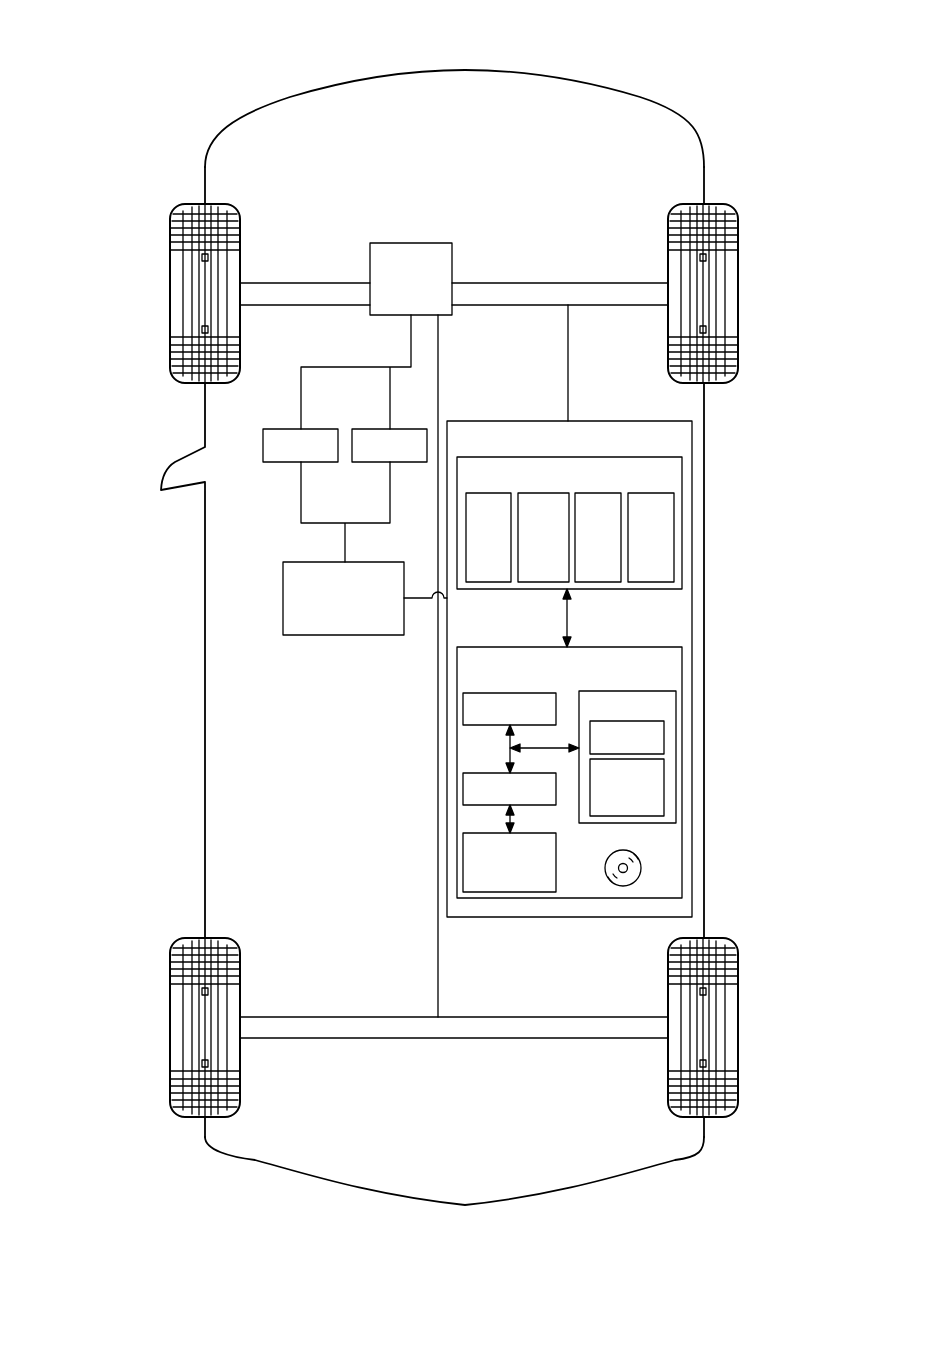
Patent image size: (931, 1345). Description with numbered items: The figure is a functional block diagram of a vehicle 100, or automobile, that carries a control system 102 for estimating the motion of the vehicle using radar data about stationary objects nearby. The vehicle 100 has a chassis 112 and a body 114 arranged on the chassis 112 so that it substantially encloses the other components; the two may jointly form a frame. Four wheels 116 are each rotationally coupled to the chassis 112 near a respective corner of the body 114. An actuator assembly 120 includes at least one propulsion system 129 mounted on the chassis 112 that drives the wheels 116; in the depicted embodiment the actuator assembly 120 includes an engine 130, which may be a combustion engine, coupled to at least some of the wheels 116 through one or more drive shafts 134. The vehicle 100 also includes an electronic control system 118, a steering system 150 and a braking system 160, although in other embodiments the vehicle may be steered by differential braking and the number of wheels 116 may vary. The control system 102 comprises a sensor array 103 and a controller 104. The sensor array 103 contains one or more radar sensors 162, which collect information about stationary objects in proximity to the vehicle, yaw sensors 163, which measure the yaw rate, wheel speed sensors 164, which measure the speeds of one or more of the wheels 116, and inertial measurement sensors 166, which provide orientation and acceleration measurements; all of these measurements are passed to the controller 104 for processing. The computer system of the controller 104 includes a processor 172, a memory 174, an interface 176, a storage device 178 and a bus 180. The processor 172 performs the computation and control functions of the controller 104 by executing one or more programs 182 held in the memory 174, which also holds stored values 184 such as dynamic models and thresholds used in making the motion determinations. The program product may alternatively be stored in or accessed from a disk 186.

The vehicle 100 is at (404, 603).
The control system 102 is at (586, 455).
The sensor array 103 is at (586, 489).
The controller 104 is at (586, 682).
The chassis 112 is at (438, 965).
The body 114 is at (205, 805).
The wheels 116 is at (170, 228).
The electronic control system 118 is at (363, 613).
The actuator assembly 120 is at (451, 326).
The propulsion system 129 is at (416, 243).
The engine 130 is at (430, 294).
The drive shafts 134 is at (320, 283).
The steering system 150 is at (320, 461).
The braking system 160 is at (409, 461).
The radar sensors 162 is at (507, 552).
The yaw sensors 163 is at (617, 552).
The wheel speed sensors 164 is at (562, 552).
The inertial measurement sensors 166 is at (670, 552).
The processor 172 is at (529, 724).
The memory 174 is at (646, 721).
The interface 176 is at (529, 804).
The storage device 178 is at (529, 877).
The bus 180 is at (510, 757).
The program 182 is at (646, 752).
The stored values 184 is at (646, 802).
The disk 186 is at (641, 875).